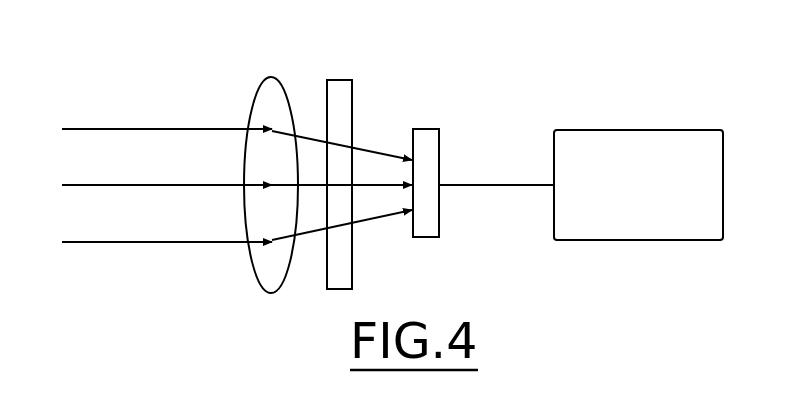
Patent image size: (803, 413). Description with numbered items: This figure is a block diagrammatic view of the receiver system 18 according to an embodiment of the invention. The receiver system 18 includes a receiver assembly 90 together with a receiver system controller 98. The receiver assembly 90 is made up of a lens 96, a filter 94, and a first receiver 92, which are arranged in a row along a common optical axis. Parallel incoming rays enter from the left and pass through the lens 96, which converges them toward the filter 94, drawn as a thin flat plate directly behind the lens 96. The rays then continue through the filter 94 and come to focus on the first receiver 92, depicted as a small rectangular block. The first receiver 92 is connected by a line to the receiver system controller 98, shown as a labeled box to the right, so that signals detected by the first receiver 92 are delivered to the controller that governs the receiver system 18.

The receiver system 18 is at (704, 48).
The receiver assembly 90 is at (529, 293).
The first receiver 92 is at (439, 148).
The filter 94 is at (352, 270).
The lens 96 is at (254, 102).
The receiver system controller 98 is at (657, 130).